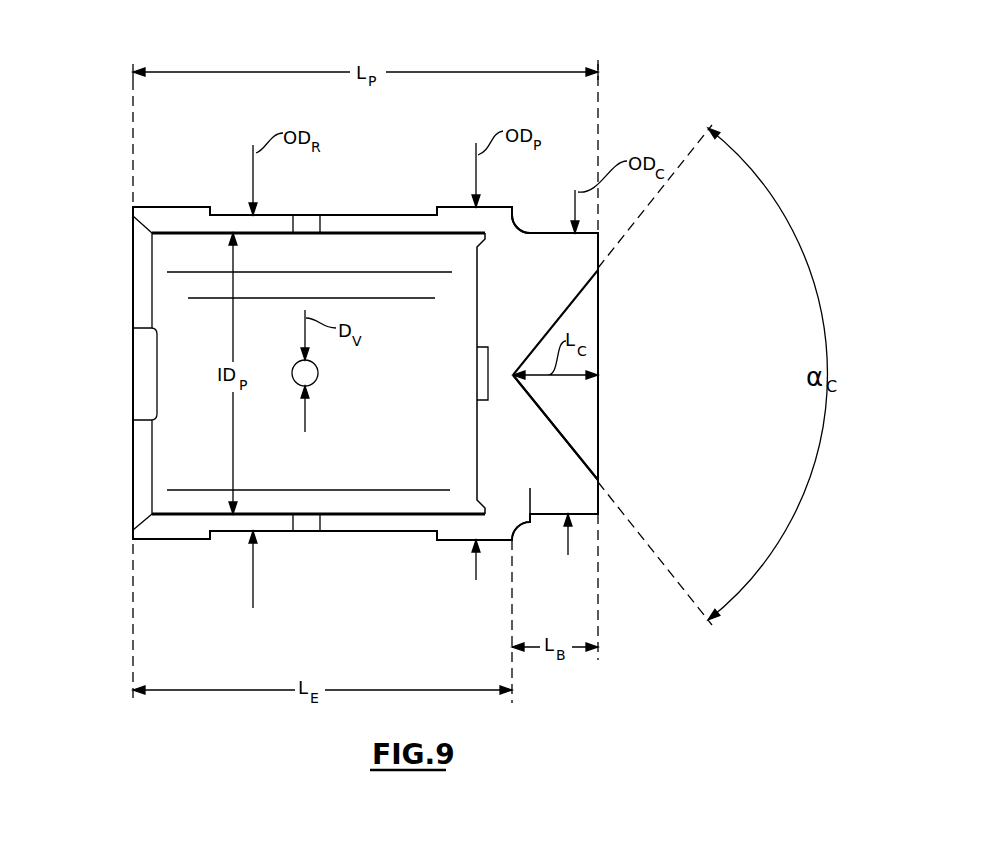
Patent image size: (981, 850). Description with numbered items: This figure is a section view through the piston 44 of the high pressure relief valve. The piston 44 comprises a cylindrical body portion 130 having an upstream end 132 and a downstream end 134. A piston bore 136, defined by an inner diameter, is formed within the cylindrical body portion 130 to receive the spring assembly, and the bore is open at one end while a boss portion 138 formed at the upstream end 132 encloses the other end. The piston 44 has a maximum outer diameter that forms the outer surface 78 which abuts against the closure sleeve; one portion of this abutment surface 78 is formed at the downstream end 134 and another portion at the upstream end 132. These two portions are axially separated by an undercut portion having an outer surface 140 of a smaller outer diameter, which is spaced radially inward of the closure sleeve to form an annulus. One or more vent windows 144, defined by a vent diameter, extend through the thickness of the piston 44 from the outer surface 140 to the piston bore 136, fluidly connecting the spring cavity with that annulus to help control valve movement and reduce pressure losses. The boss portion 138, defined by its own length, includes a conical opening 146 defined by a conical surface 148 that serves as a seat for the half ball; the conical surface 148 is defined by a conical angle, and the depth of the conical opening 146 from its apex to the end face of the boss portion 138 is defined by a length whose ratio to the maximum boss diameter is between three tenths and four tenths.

The piston 44 is at (86, 50).
The outer surface 78 is at (172, 540).
The cylindrical body portion 130 is at (378, 222).
The upstream end 132 is at (515, 216).
The downstream end 134 is at (133, 213).
The piston bore 136 is at (372, 504).
The boss portion 138 is at (530, 522).
The outer surface 140 is at (408, 220).
The vent windows 144 is at (312, 228).
The conical opening 146 is at (589, 428).
The conical surface 148 is at (548, 418).